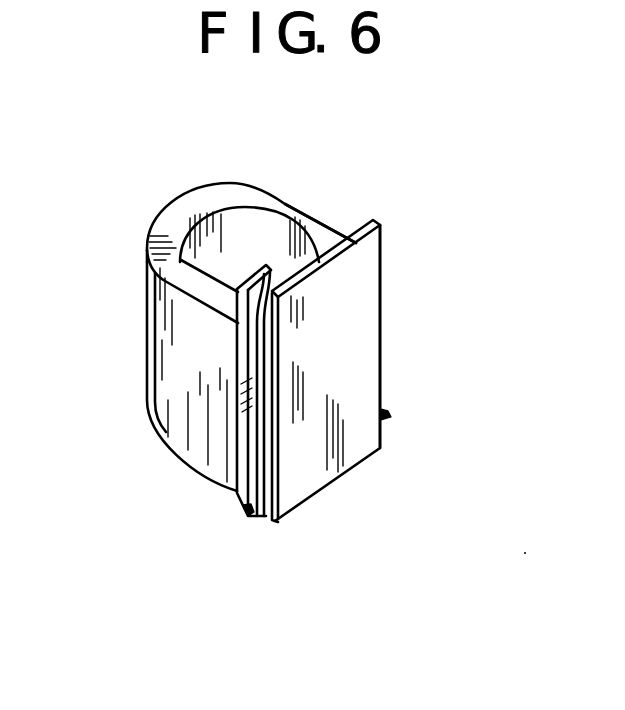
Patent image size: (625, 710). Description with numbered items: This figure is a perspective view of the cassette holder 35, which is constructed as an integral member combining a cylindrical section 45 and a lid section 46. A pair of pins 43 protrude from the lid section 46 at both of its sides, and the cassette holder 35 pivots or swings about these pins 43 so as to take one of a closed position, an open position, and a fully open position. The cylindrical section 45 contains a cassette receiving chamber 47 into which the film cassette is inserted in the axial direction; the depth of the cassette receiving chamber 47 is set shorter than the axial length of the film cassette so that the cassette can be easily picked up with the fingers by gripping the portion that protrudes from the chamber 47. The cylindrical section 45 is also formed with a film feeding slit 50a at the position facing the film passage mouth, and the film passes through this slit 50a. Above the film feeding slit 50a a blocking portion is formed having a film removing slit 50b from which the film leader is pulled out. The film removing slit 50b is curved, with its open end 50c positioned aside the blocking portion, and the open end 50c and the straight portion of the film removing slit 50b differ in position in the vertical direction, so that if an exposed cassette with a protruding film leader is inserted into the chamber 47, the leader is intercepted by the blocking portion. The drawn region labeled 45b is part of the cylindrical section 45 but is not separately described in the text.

The cassette holder 35 is at (393, 272).
The pins 43 is at (388, 414).
The cylindrical section 45 is at (152, 320).
The flat portion of holder 45b is at (316, 214).
The lid section 46 is at (382, 323).
The cassette receiving chamber 47 is at (211, 208).
The film feeding slit 50a is at (233, 420).
The film removing slit 50b is at (256, 344).
The open end 50c is at (266, 270).